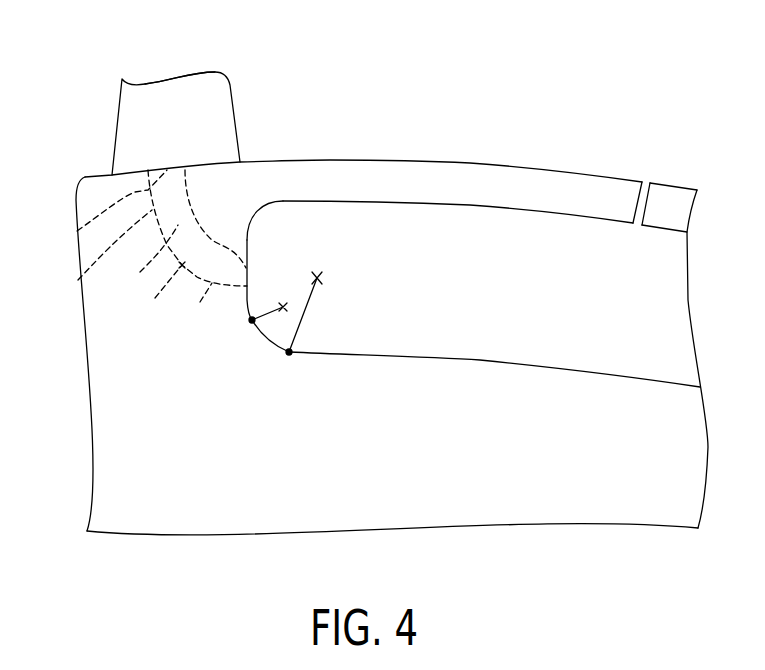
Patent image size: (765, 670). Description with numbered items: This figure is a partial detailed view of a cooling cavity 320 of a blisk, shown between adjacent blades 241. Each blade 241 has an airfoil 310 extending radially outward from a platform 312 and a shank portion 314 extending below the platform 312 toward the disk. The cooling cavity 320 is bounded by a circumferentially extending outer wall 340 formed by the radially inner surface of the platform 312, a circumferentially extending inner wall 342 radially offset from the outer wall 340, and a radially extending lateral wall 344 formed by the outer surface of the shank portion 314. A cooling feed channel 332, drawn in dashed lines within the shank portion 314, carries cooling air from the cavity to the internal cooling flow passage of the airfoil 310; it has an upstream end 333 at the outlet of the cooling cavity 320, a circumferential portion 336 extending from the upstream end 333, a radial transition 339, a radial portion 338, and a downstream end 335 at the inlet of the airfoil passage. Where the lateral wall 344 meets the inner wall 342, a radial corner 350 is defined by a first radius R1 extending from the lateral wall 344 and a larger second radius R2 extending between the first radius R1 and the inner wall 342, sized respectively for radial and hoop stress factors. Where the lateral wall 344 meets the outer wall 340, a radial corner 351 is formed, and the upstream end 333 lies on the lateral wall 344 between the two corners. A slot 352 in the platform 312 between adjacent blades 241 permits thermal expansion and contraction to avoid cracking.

The blade 241 is at (208, 79).
The airfoil 310 is at (128, 145).
The platform 312 is at (393, 177).
The shank portion 314 is at (95, 327).
The cooling cavity 320 is at (618, 323).
The cooling feed channel 332 is at (178, 235).
The upstream end 333 is at (215, 219).
The downstream end 335 is at (76, 231).
The circumferential portion 336 is at (186, 322).
The radial portion 338 is at (77, 280).
The radial transition 339 is at (157, 298).
The outer wall 340 is at (488, 207).
The inner wall 342 is at (517, 360).
The lateral wall 344 is at (247, 313).
The radial corner 350 is at (273, 350).
The radial corner 351 is at (258, 212).
The slot 352 is at (647, 181).
The first radius R1 is at (258, 313).
The second radius R2 is at (307, 308).